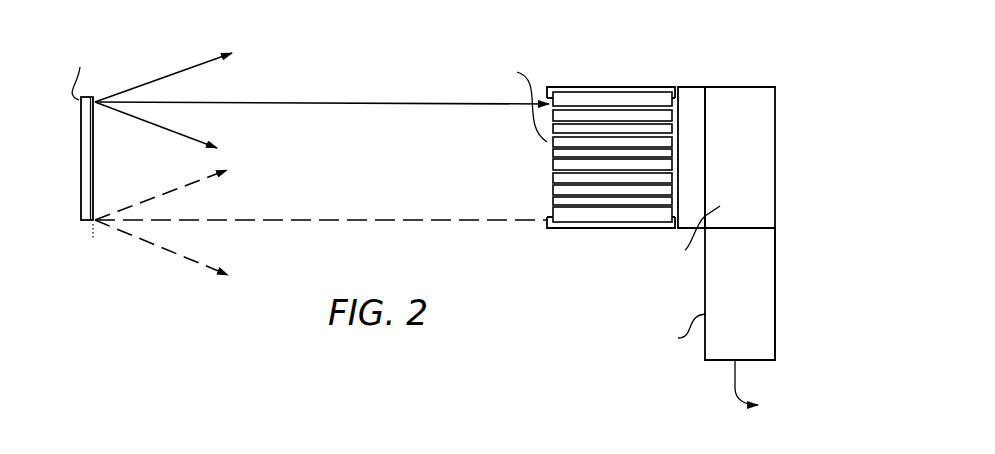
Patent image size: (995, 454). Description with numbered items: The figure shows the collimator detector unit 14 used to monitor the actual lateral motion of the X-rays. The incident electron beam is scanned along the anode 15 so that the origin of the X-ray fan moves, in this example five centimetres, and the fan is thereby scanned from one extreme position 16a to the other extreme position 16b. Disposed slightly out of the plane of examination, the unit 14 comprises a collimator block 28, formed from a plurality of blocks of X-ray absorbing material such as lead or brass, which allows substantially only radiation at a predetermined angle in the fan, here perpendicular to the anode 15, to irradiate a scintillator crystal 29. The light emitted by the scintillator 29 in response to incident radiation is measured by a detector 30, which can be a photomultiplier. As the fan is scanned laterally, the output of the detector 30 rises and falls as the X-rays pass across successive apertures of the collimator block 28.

The anode 15 is at (80, 164).
The X-ray fan position 16a is at (143, 127).
The X-ray fan position 16b is at (133, 205).
The collimator block 28 is at (603, 100).
The collimator detector unit 14 is at (688, 87).
The scintillator crystal 29 is at (740, 87).
The detector 30 is at (776, 308).